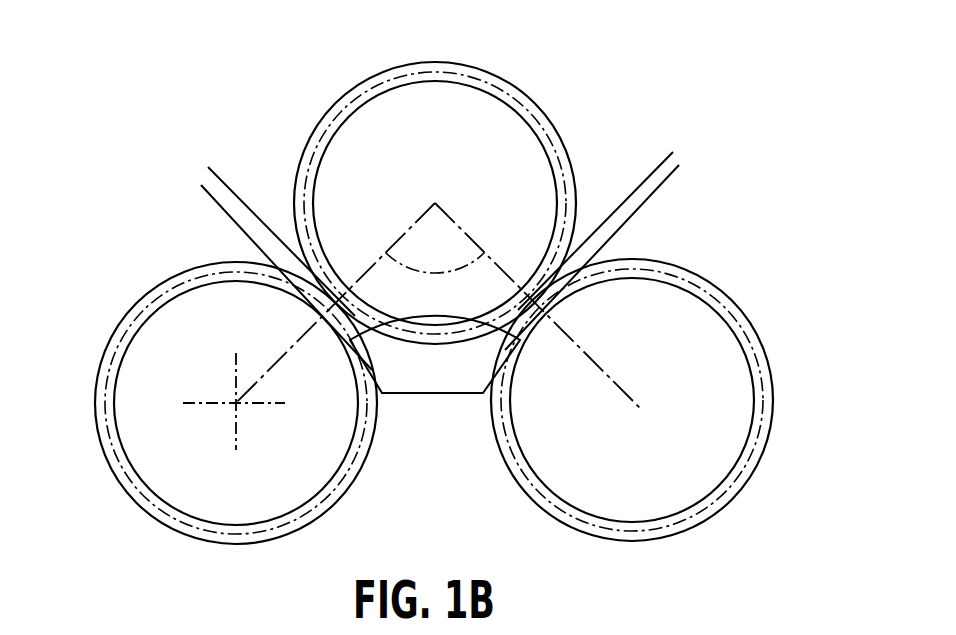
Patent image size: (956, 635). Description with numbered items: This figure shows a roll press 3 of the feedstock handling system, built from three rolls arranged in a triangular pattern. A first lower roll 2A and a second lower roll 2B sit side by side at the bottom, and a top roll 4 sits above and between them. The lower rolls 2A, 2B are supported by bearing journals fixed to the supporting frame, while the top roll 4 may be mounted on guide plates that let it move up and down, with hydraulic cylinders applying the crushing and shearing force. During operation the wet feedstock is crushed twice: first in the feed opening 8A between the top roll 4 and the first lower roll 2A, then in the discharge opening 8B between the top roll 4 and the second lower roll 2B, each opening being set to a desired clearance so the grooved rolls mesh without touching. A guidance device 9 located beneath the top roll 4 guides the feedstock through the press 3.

The roll press 3 is at (198, 93).
The top roll 4 is at (382, 127).
The first lower roll 2A is at (730, 442).
The second lower roll 2B is at (122, 450).
The feed opening 8A is at (627, 145).
The discharge opening 8B is at (250, 147).
The guidance device 9 is at (453, 383).